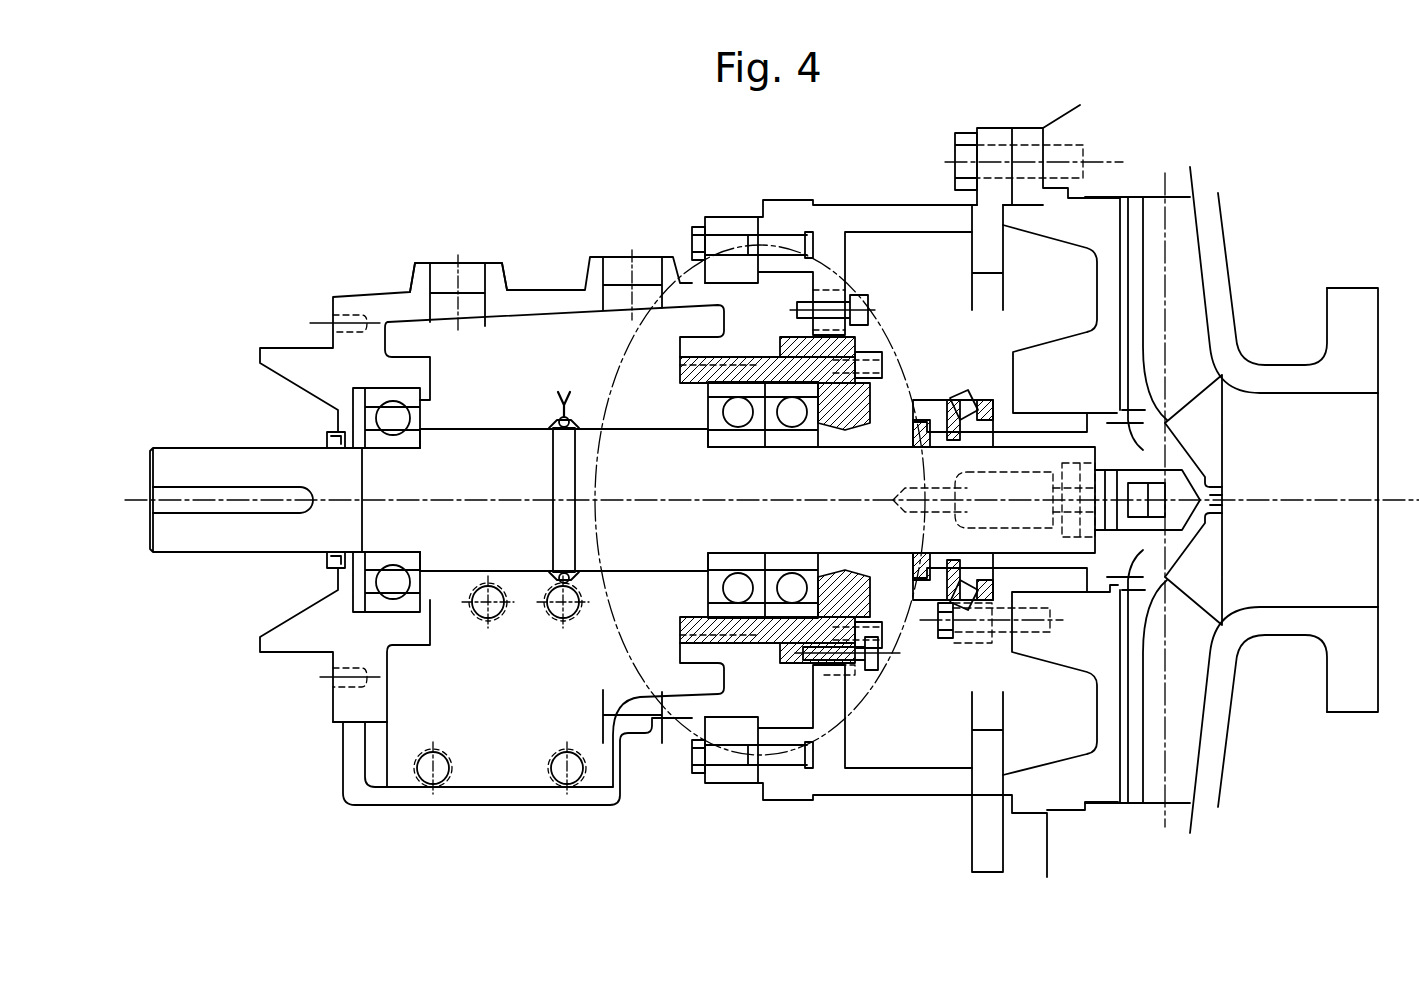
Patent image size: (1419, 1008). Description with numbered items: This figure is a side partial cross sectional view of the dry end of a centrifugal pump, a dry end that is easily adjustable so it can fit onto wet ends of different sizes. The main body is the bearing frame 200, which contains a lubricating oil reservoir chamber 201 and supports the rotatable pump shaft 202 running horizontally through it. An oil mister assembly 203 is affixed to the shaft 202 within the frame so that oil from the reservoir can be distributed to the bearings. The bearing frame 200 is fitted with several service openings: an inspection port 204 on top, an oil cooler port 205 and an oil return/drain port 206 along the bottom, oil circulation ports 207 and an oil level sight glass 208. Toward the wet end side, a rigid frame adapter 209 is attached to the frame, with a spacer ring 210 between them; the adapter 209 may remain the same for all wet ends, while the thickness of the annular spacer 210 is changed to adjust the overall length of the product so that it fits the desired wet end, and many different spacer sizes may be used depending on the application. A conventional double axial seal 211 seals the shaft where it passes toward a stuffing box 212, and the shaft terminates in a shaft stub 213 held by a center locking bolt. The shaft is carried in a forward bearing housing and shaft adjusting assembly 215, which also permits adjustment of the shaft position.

The bearing frame 200 is at (382, 793).
The lubricating oil reservoir chamber 201 is at (502, 757).
The rotatable pump shaft 202 is at (500, 440).
The oil mister assembly 203 is at (560, 387).
The inspection port 204 is at (440, 268).
The oil cooler port 205 is at (438, 778).
The oil return/drain port 206 is at (575, 778).
The oil circulation port 207 is at (575, 612).
The oil level sight glass 208 is at (505, 612).
The rigid frame adapter 209 is at (905, 210).
The spacer ring 210 is at (757, 213).
The double axial seal 211 is at (968, 388).
The stuffing box 212 is at (1085, 352).
The shaft stub 213 is at (1110, 460).
The forward bearing housing and shaft adjusting assembly 215 is at (880, 693).